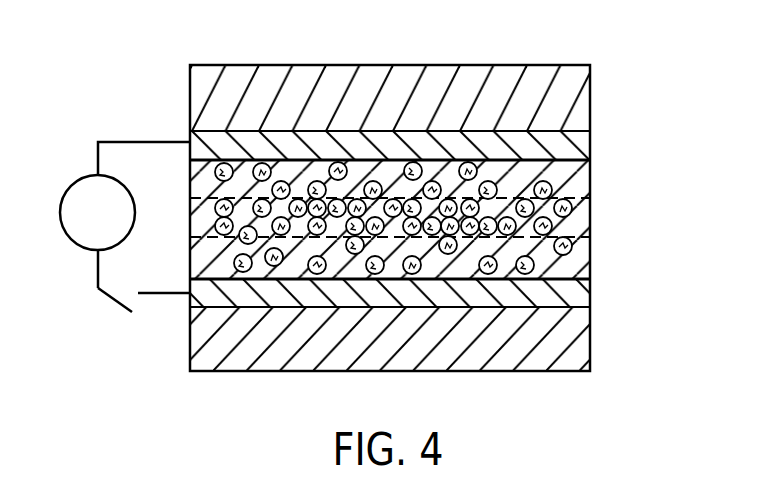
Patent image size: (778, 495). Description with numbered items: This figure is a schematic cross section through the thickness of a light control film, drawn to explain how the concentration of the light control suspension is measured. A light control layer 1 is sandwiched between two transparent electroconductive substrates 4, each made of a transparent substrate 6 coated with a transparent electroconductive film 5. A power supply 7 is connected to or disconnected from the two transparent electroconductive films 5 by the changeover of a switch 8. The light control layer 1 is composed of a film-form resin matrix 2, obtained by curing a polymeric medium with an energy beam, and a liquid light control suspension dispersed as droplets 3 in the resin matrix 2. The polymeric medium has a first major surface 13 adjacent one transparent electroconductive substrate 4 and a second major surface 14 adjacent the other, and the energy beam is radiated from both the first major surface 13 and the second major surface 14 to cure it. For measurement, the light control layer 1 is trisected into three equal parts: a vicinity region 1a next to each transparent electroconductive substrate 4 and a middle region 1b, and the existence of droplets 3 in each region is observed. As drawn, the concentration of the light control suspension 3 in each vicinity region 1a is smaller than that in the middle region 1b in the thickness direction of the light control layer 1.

The light control layer 1 is at (435, 220).
The vicinity region 1a is at (190, 182).
The middle region 1b is at (190, 223).
The resin matrix 2 is at (402, 220).
The droplets of light control suspension 3 is at (569, 251).
The transparent electroconductive substrate 4 is at (692, 78).
The transparent electroconductive film 5 is at (590, 145).
The transparent substrate 6 is at (590, 93).
The power supply 7 is at (73, 176).
The switch 8 is at (110, 303).
The first major surface 13 is at (295, 158).
The second major surface 14 is at (290, 278).